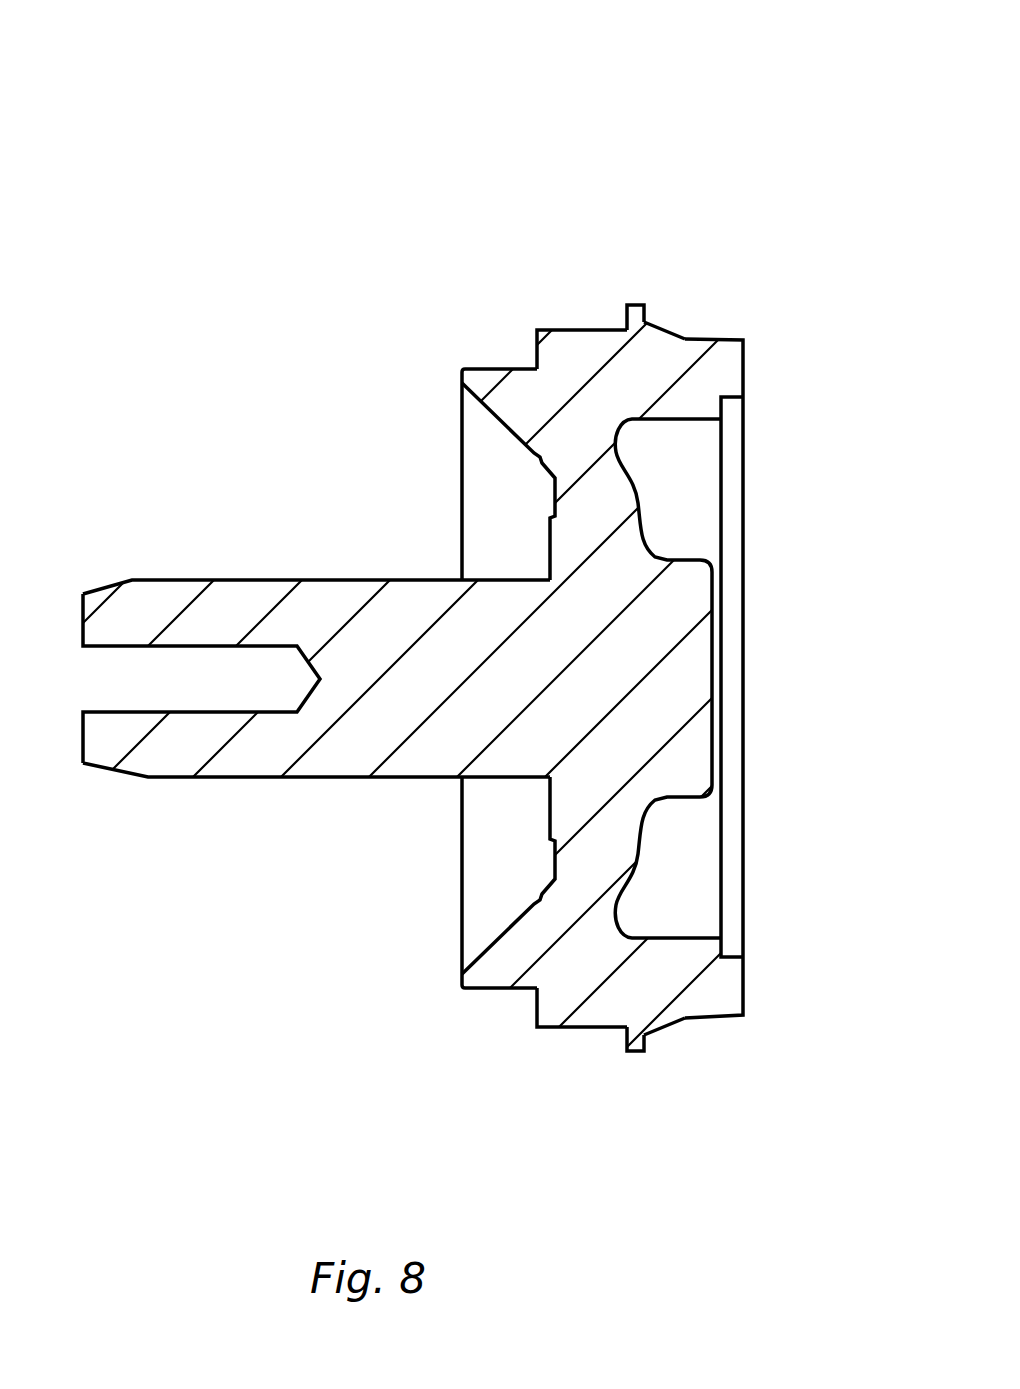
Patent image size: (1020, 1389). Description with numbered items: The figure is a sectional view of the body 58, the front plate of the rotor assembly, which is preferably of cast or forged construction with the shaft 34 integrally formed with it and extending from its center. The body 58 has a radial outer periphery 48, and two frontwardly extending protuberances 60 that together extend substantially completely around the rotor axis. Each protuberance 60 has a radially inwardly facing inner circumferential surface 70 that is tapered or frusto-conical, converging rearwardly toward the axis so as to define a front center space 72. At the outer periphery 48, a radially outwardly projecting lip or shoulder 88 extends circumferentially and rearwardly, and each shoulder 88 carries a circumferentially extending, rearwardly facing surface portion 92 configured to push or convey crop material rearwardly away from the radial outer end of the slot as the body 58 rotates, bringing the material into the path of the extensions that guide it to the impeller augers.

The shaft 34 is at (132, 581).
The radial outer periphery 48 is at (687, 333).
The body 58 is at (705, 132).
The protuberance 60 is at (495, 367).
The inner circumferential surface 70 is at (497, 890).
The front center space 72 is at (500, 488).
The shoulder 88 is at (635, 304).
The rearwardly facing surface portion 92 is at (650, 311).